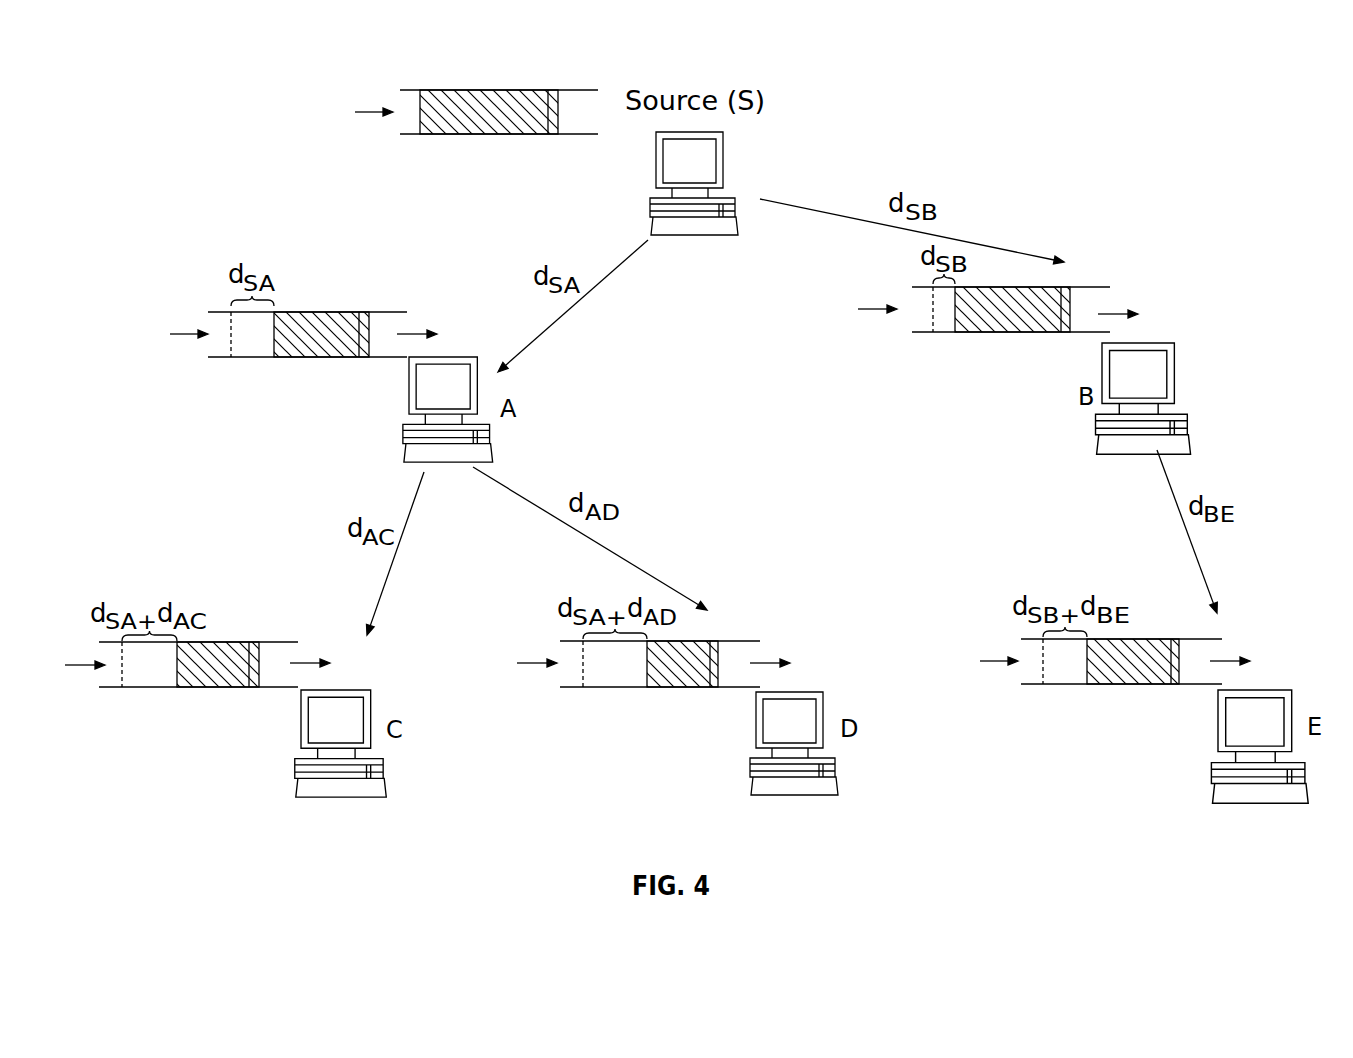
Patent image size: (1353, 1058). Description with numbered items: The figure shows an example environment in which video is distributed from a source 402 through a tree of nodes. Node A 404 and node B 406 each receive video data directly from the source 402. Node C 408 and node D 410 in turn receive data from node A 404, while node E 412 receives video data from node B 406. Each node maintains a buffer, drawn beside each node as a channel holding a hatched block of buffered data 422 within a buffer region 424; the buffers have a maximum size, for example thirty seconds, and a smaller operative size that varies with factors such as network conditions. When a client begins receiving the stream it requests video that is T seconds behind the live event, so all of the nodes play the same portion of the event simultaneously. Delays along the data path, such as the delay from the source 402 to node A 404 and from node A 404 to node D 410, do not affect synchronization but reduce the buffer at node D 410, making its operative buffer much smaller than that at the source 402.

The source 402 is at (725, 170).
The node A 404 is at (448, 357).
The node B 406 is at (1144, 343).
The node C 408 is at (337, 690).
The node D 410 is at (793, 692).
The node E 412 is at (1260, 690).
The data packet 422 is at (558, 85).
The communication link 424 is at (411, 135).